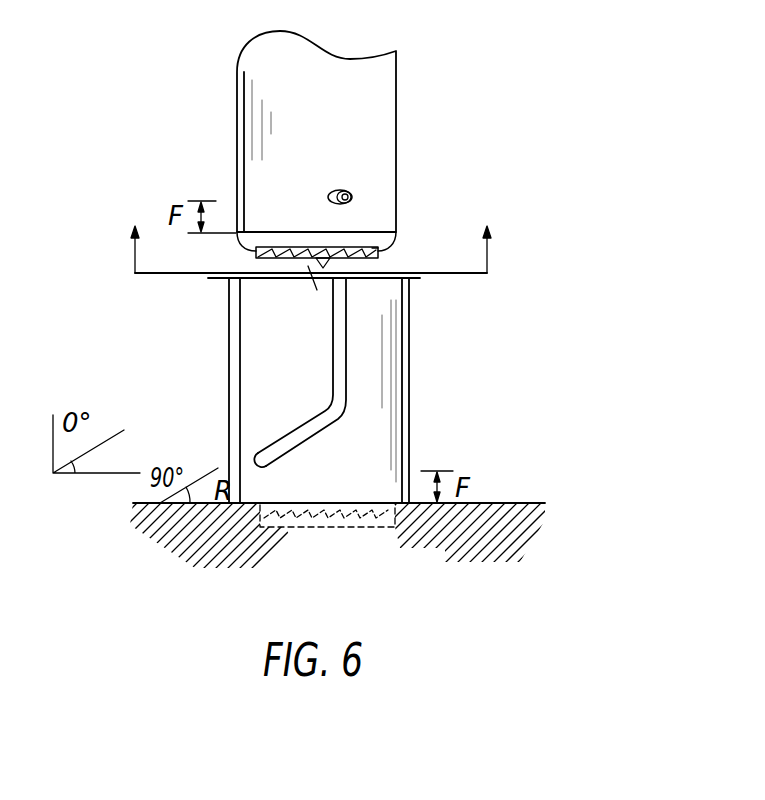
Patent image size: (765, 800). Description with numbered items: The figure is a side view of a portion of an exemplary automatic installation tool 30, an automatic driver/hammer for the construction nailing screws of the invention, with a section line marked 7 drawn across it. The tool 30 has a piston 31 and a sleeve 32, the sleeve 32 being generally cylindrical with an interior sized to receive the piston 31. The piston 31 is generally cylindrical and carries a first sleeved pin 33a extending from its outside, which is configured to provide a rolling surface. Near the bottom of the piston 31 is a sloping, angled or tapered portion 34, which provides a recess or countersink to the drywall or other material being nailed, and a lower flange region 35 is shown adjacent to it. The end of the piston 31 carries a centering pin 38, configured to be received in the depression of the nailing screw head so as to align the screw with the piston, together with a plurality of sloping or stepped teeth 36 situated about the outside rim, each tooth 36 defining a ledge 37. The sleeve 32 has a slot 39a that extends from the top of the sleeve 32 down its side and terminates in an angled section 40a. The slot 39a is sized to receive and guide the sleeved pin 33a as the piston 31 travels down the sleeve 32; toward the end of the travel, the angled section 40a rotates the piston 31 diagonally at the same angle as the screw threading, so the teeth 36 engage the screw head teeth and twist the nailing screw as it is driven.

The automatic installation tool 30 is at (568, 93).
The piston 31 is at (376, 96).
The sleeve 32 is at (370, 362).
The first sleeved pin 33a is at (346, 192).
The tapered portion 34 is at (398, 238).
The base flange 35 is at (250, 254).
The teeth 36 is at (310, 250).
The ledge 37 is at (372, 232).
The centering pin 38 is at (326, 266).
The first slot 39a is at (334, 328).
The angled section 40a is at (263, 457).
The section line 7- 7 is at (310, 267).